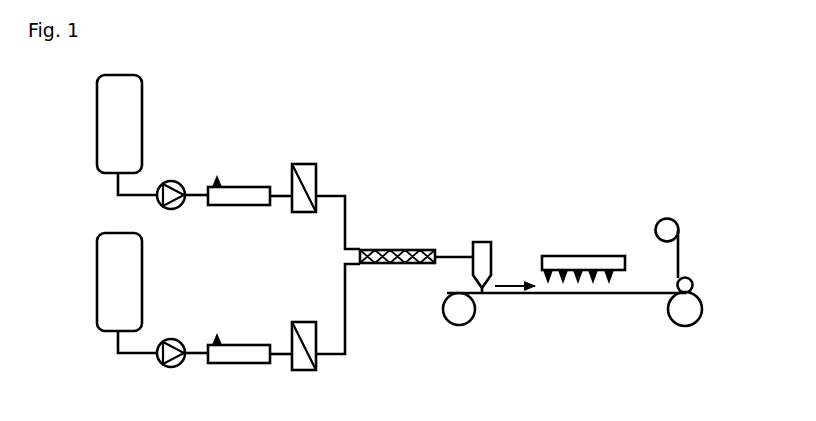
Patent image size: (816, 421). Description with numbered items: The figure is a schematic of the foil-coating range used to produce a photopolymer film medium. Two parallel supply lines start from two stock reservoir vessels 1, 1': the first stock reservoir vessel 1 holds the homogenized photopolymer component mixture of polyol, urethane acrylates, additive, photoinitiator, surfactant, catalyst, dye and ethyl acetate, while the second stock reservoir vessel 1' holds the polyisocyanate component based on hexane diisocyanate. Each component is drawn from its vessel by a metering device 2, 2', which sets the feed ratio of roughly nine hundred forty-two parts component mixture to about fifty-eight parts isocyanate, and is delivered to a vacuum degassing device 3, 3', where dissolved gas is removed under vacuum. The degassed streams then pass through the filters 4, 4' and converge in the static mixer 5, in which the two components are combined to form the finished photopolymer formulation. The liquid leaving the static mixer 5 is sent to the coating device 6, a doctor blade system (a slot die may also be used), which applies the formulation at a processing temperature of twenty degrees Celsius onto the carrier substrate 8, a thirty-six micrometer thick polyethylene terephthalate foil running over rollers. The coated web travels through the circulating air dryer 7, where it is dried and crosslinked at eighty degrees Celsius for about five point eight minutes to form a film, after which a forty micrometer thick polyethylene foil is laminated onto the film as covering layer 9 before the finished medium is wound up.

The stock reservoir vessel 1 is at (89, 124).
The stock reservoir vessel 1' is at (92, 283).
The metering device 2 is at (172, 150).
The metering device 2' is at (177, 312).
The vacuum degassing device 3 is at (239, 144).
The vacuum degassing device 3' is at (245, 306).
The filter 4 is at (330, 159).
The filter 4' is at (335, 320).
The static mixer 5 is at (392, 238).
The coating device 6 is at (489, 230).
The circulating air dryer 7 is at (589, 245).
The carrier substrate 8 is at (488, 302).
The covering layer 9 is at (678, 215).